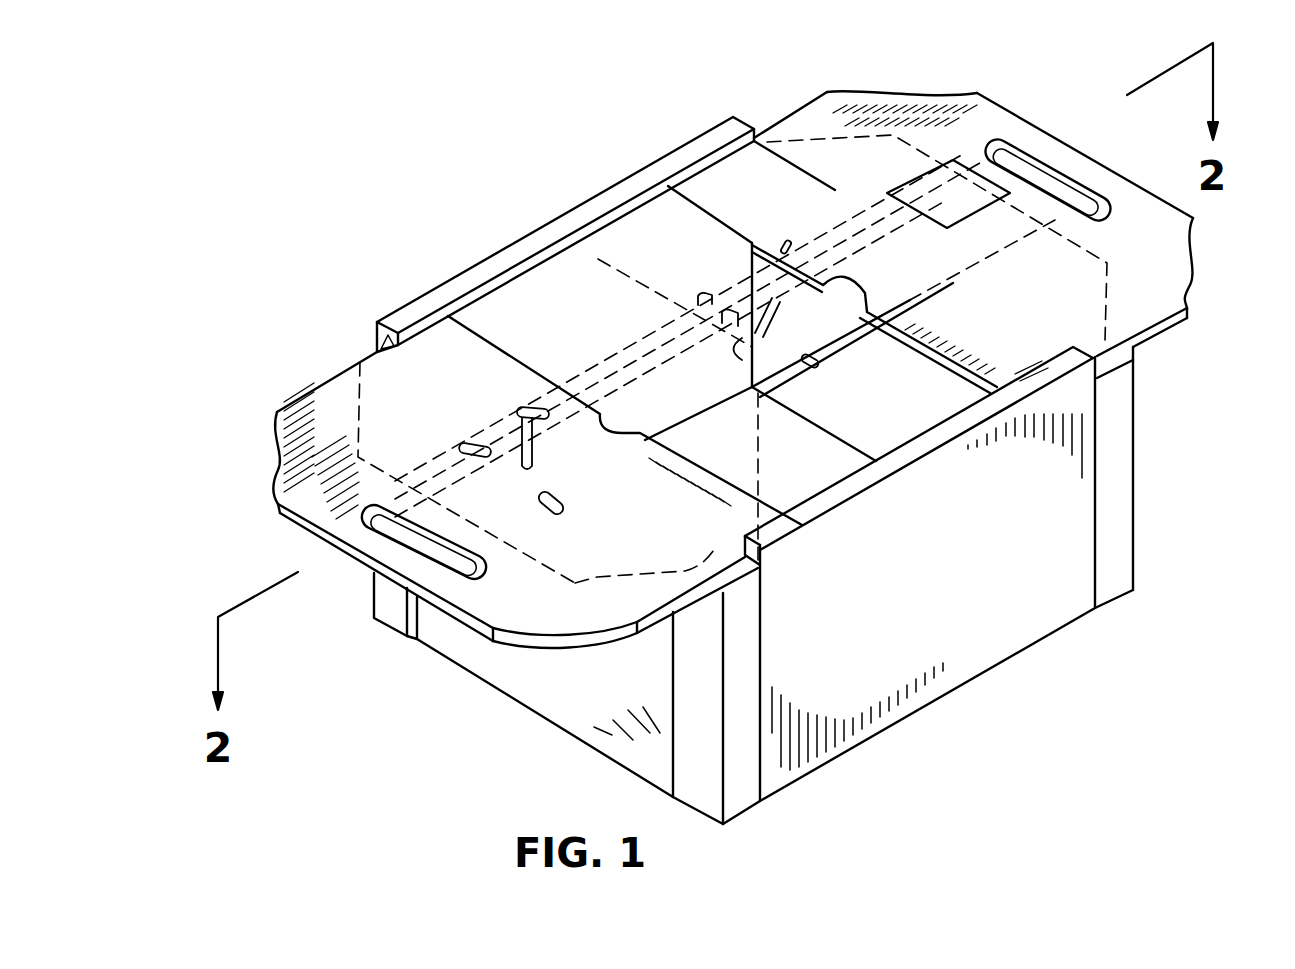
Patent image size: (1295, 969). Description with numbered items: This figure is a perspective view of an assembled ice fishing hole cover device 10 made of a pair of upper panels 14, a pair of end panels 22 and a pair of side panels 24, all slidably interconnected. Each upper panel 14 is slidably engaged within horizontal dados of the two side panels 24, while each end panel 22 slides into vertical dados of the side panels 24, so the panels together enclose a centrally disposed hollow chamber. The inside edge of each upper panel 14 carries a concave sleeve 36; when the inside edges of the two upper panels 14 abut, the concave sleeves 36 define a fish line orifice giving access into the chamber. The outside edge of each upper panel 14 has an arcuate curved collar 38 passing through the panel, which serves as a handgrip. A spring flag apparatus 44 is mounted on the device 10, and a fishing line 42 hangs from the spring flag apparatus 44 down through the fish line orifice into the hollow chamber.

The ice fishing hole cover device 10 is at (487, 136).
The upper panel 14 is at (293, 448).
The end panel 22 is at (600, 710).
The side panel 24 is at (985, 637).
The concave sleeve 36 is at (603, 410).
The arcuate curved collar 38 is at (413, 527).
The fishing line 42 is at (760, 447).
The spring flag apparatus 44 is at (752, 243).